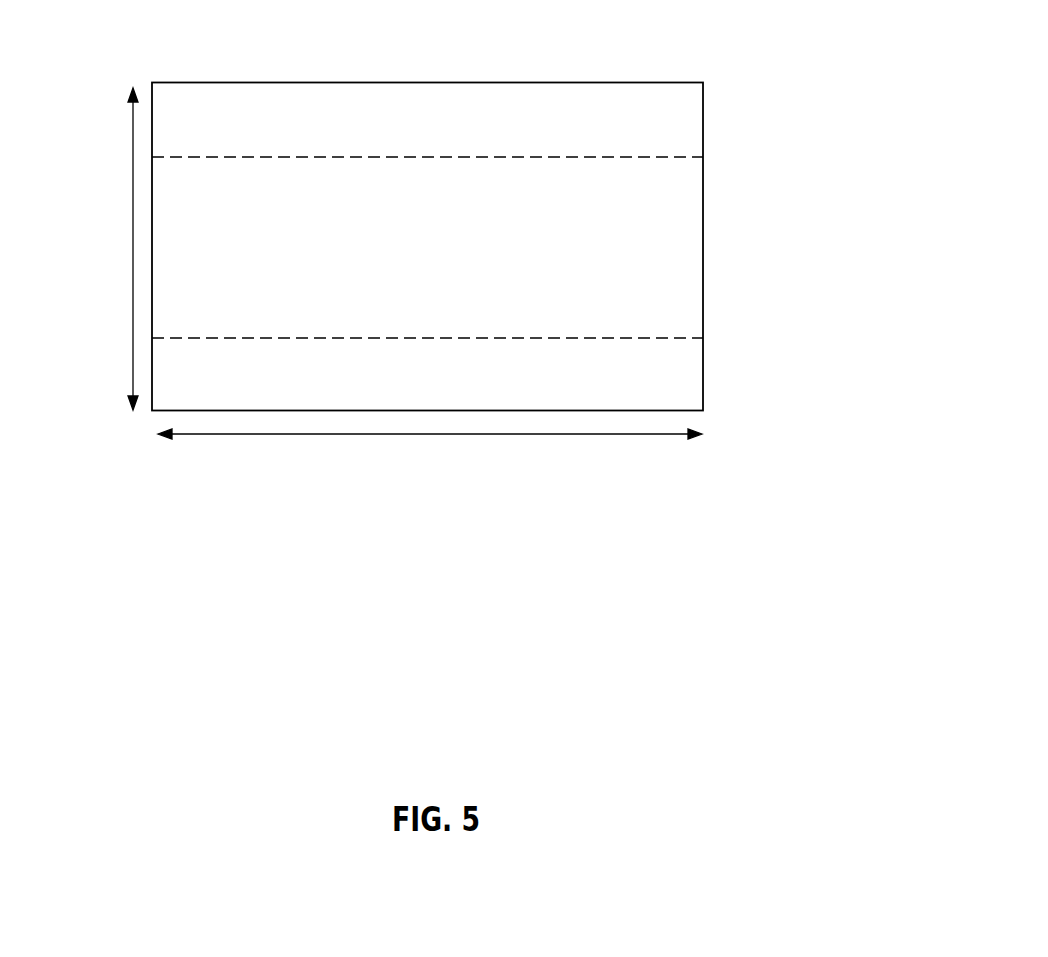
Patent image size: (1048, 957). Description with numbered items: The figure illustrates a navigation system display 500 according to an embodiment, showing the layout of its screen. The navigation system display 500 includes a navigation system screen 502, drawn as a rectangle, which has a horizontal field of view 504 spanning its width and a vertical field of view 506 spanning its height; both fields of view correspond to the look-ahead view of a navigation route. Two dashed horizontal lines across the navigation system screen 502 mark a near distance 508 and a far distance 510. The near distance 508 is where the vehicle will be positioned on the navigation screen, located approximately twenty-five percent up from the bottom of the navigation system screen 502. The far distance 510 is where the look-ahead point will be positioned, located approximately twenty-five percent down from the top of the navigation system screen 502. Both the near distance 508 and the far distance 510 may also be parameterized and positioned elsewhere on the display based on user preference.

The navigation system display 500 is at (1032, 74).
The navigation system screen 502 is at (683, 82).
The horizontal field of view 504 is at (600, 434).
The vertical field of view 506 is at (130, 138).
The near distance 508 is at (680, 338).
The far distance 510 is at (678, 157).